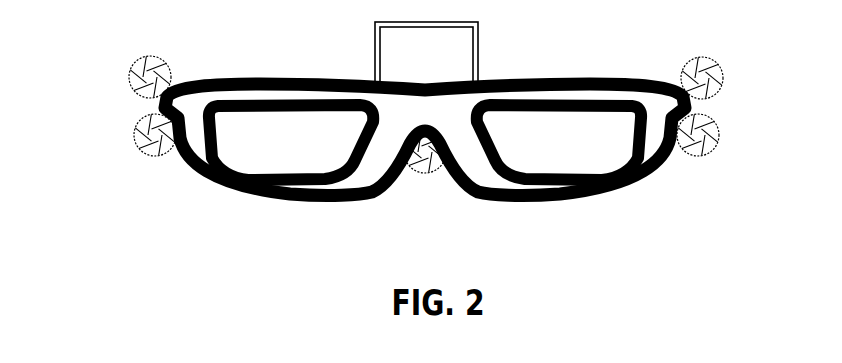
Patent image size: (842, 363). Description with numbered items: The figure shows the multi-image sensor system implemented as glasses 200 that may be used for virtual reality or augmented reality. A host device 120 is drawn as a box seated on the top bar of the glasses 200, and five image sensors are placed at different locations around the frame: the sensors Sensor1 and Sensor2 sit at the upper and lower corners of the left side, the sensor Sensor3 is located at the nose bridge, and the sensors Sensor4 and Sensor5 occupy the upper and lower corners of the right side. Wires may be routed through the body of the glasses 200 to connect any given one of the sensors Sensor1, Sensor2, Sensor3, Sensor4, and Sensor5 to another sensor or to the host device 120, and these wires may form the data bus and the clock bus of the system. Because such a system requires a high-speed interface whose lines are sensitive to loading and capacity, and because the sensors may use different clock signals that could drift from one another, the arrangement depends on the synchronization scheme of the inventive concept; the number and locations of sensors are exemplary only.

The host device 120 is at (426, 54).
The glasses 200 is at (425, 139).
The sensor Sensor1 is at (137, 63).
The sensor Sensor2 is at (140, 141).
The sensor Sensor3 is at (418, 166).
The sensor Sensor4 is at (718, 62).
The sensor Sensor5 is at (710, 150).